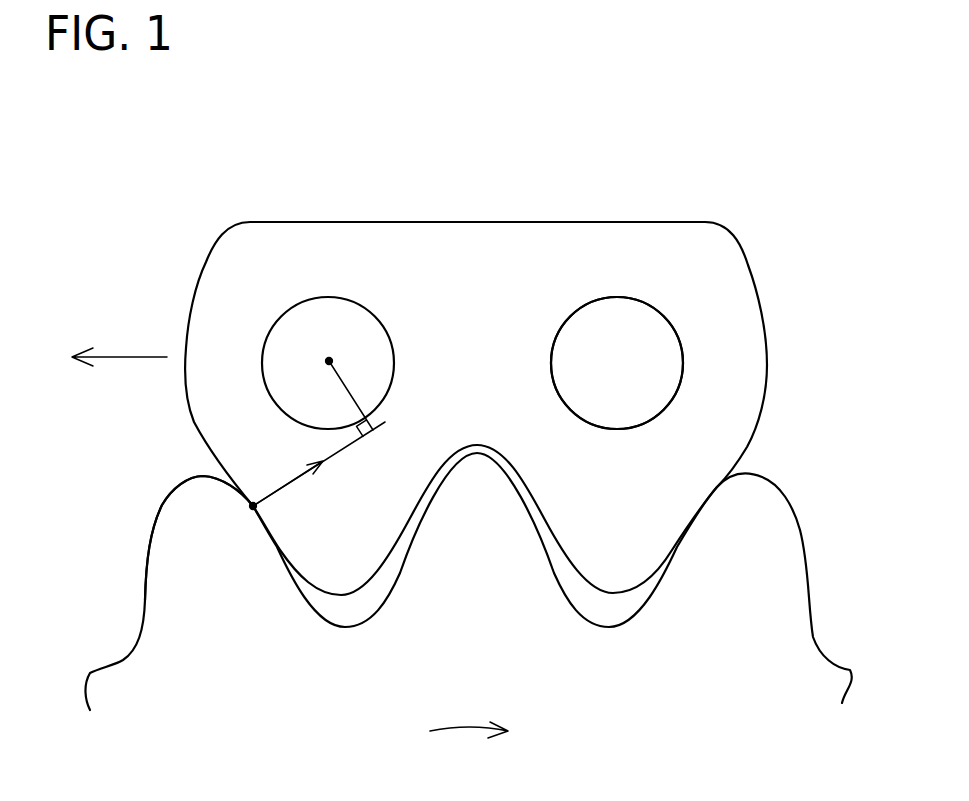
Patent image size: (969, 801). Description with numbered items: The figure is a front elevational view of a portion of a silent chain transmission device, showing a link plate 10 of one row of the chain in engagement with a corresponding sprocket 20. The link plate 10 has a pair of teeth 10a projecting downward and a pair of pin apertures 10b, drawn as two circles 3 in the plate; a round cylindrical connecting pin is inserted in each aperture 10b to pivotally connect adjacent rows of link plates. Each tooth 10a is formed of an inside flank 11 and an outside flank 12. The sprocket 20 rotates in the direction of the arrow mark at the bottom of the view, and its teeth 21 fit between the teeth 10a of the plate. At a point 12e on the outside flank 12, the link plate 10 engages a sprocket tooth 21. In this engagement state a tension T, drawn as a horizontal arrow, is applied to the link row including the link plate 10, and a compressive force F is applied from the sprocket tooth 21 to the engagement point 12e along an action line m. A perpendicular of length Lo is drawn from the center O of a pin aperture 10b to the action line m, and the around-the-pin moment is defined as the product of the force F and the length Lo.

The link plate 10 is at (512, 183).
The pin hole 3 is at (341, 312).
The pin aperture 10b is at (580, 309).
The tooth 10a is at (335, 587).
The inside flank 11 is at (562, 548).
The outside flank 12 is at (668, 558).
The engagement point 12e is at (228, 521).
The sprocket 20 is at (173, 725).
The sprocket tooth 21 is at (182, 495).
The action line m is at (340, 451).
The compressive force F is at (288, 490).
The center of pin aperture O is at (319, 347).
The length of perpendicular Lo is at (369, 420).
The tension T is at (119, 344).